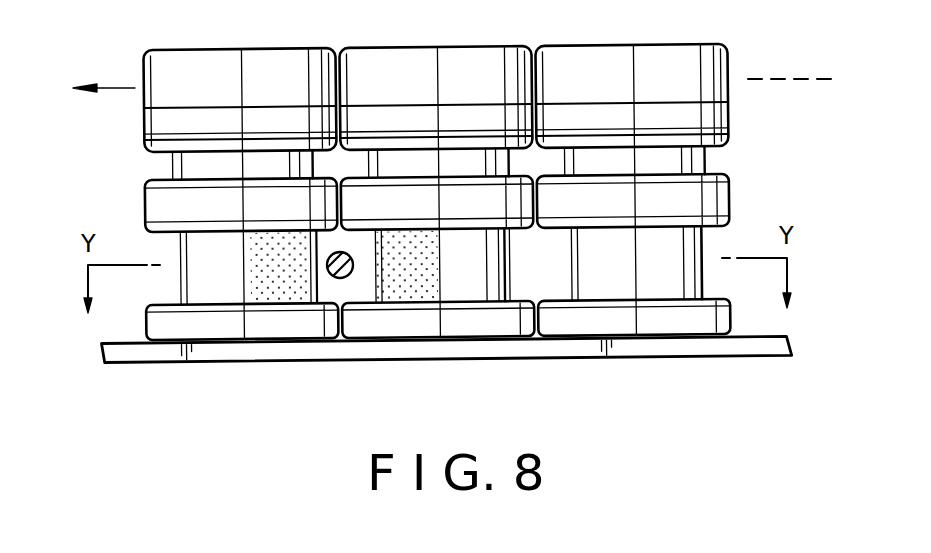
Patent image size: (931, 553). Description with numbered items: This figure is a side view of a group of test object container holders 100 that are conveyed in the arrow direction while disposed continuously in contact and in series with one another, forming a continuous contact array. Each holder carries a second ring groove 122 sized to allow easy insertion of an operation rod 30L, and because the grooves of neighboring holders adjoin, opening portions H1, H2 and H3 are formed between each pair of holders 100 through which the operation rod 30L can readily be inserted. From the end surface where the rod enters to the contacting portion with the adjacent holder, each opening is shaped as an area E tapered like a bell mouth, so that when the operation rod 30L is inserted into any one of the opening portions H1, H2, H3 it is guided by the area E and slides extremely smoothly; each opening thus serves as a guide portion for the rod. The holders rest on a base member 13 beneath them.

The test object container holder 100 is at (246, 60).
The second ring groove 122 is at (180, 286).
The base plate 13 is at (165, 363).
The area tapered like a bell mouth E is at (277, 288).
The opening portion H1 is at (325, 288).
The operation rod 30L is at (353, 272).
The opening portion H2 is at (523, 288).
The opening portion H3 is at (712, 286).